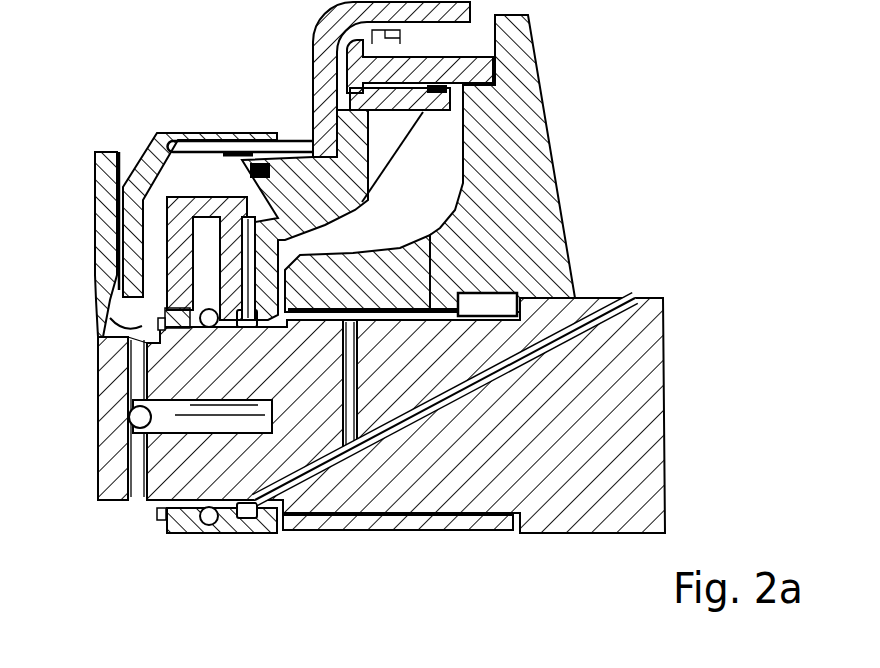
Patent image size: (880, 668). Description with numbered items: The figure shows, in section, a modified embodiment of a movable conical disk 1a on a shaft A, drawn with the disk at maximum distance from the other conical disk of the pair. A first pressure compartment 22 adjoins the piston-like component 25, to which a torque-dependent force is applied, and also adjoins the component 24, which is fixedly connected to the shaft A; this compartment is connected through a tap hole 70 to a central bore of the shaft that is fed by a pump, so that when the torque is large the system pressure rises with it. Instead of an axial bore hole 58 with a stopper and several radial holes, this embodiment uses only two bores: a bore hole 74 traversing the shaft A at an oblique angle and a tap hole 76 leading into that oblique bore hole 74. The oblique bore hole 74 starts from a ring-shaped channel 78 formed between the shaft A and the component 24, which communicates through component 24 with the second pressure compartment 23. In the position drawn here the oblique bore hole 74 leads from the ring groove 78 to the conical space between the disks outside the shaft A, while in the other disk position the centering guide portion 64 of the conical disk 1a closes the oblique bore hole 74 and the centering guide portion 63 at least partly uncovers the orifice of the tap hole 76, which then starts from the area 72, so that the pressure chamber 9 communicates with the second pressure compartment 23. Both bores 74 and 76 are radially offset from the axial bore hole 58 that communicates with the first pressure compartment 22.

The conical disk 1a is at (527, 157).
The pressure chamber 9 is at (438, 172).
The first pressure compartment 22 is at (140, 327).
The second pressure compartment 23 is at (297, 173).
The component 24 is at (357, 117).
The piston-like component 25 is at (167, 273).
The axial bore hole 58 is at (180, 425).
The centering guide portion 63 is at (310, 290).
The centering guide portion 64 is at (543, 293).
The tap hole 70 is at (138, 376).
The area 72 is at (426, 305).
The oblique bore hole 74 is at (470, 380).
The tap hole 76 is at (355, 415).
The ring-shaped channel 78 is at (249, 512).
The shaft A is at (653, 327).